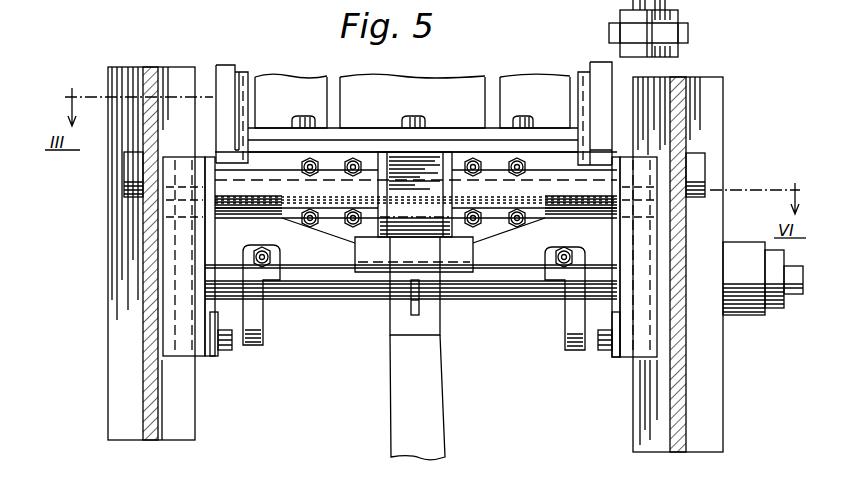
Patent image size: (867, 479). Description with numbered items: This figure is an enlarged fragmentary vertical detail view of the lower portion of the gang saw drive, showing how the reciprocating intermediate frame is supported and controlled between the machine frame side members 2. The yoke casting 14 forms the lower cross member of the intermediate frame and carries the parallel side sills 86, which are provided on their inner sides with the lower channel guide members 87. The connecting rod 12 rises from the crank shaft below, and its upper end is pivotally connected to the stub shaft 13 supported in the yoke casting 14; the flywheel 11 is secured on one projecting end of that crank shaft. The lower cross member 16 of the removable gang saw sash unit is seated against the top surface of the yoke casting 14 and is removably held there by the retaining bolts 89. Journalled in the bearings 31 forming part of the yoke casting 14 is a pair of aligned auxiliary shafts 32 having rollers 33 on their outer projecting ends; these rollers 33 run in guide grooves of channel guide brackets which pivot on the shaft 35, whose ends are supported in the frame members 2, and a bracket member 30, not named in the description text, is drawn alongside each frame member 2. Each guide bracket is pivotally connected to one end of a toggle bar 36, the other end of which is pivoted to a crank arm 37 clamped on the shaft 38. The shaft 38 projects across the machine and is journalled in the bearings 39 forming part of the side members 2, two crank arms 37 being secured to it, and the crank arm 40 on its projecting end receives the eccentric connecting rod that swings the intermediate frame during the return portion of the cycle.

The frame member 2 is at (148, 390).
The flywheel 11 is at (415, 194).
The connecting rod 12 is at (405, 412).
The stub shaft 13 is at (418, 260).
The yoke casting 14 is at (365, 237).
The lower cross member 16 is at (445, 90).
The bracket 30 is at (182, 345).
The bearing 31 is at (235, 210).
The auxiliary shaft 32 is at (228, 180).
The roller 33 is at (209, 228).
The shaft 35 is at (135, 178).
The toggle bar 36 is at (232, 350).
The crank arm 37 is at (250, 327).
The shaft 38 is at (320, 285).
The bearing 39 is at (745, 296).
The crank arm 40 is at (680, 52).
The side sill 86 is at (228, 72).
The lower channel guide member 87 is at (250, 75).
The retaining bolt 89 is at (410, 120).